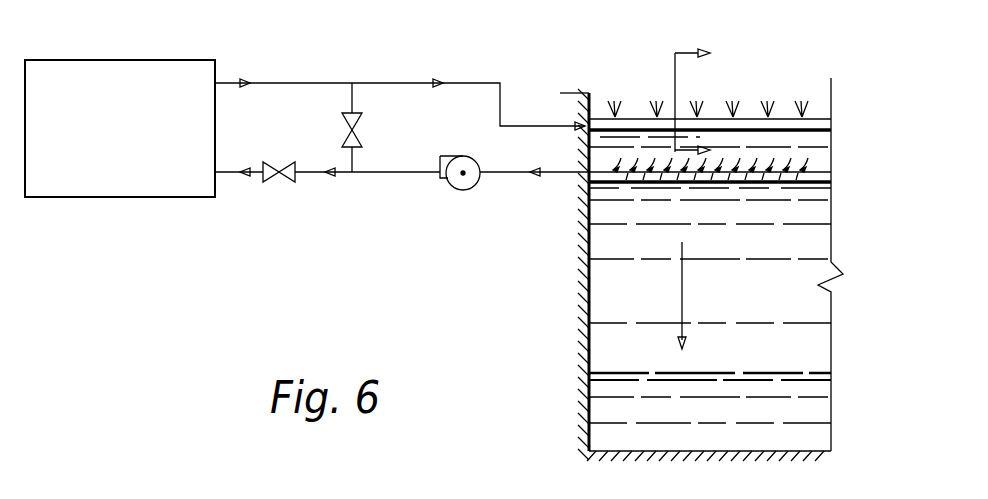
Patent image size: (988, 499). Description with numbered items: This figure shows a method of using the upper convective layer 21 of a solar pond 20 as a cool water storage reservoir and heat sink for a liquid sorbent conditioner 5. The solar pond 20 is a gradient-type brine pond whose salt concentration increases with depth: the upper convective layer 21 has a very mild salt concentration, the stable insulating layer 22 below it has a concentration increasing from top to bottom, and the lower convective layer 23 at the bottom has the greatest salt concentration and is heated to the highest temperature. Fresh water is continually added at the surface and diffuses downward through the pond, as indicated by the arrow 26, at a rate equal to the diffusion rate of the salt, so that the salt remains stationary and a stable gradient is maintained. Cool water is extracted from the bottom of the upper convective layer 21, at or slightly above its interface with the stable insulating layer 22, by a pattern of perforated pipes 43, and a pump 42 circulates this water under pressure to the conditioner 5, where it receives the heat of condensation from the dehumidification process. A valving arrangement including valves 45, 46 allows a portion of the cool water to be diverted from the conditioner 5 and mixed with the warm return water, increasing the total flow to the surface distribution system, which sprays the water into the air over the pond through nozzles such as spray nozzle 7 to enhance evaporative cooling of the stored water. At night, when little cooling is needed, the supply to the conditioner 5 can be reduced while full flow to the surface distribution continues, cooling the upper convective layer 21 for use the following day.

The conditioner 5 is at (123, 54).
The spray nozzle 7 is at (704, 103).
The solar pond 20 is at (790, 78).
The upper convective layer 21 is at (820, 156).
The stable insulating layer 22 is at (607, 296).
The lower convective layer 23 is at (603, 407).
The arrow 26 is at (682, 300).
The pump 42 is at (462, 158).
The pipes 43 is at (640, 117).
The valve 45 is at (354, 129).
The valve 46 is at (281, 181).